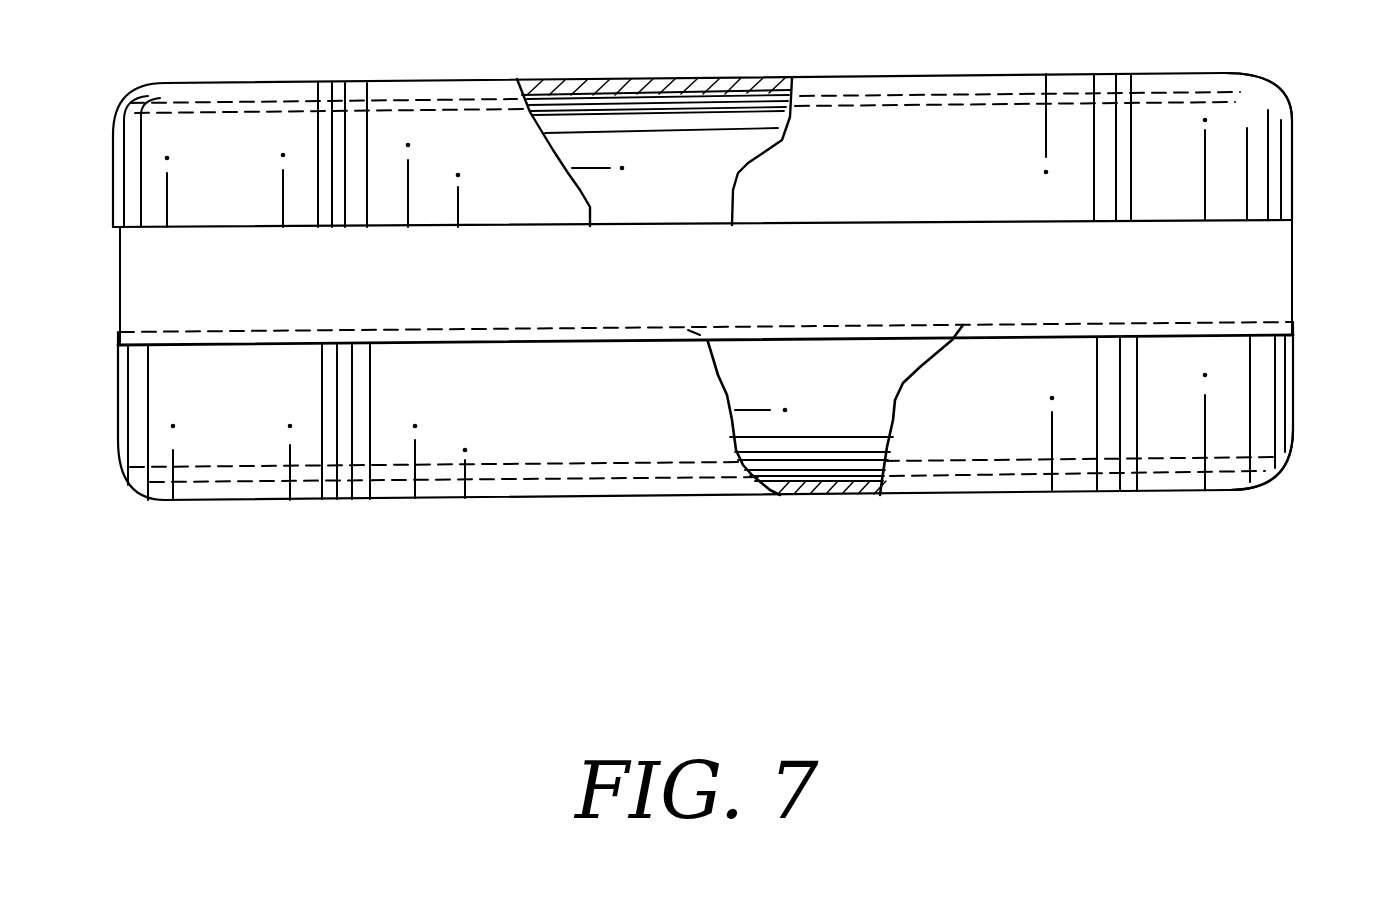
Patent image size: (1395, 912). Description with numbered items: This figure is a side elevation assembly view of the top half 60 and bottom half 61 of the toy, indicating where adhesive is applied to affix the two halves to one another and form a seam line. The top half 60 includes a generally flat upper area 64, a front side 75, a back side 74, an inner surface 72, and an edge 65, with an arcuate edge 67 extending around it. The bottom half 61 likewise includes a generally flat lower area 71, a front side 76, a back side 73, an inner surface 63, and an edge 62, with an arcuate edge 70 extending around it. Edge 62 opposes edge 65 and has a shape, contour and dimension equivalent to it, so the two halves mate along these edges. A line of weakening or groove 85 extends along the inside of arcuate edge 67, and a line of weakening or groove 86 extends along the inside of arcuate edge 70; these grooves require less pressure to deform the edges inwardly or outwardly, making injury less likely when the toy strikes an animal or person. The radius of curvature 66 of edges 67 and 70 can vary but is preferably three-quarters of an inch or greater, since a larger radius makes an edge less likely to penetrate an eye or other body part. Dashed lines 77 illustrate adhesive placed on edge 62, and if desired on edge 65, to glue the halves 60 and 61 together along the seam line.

The half 60 is at (1078, 60).
The half 61 is at (1226, 508).
The edge 62 is at (847, 340).
The inner surface 63 is at (765, 370).
The generally flat upper area 64 is at (852, 77).
The edge 65 is at (952, 225).
The radius of curvature 66 is at (1240, 105).
The arcuate edge 67 is at (126, 112).
The arcuate edge 70 is at (140, 478).
The generally flat lower area 71 is at (648, 500).
The inner surface 72 is at (758, 117).
The back side 73 is at (896, 367).
The back side 74 is at (635, 188).
The front side 75 is at (968, 186).
The front side 76 is at (538, 427).
The dashed lines 77 is at (1140, 322).
The line of weakening or groove 85 is at (273, 120).
The line of weakening or groove 86 is at (248, 460).